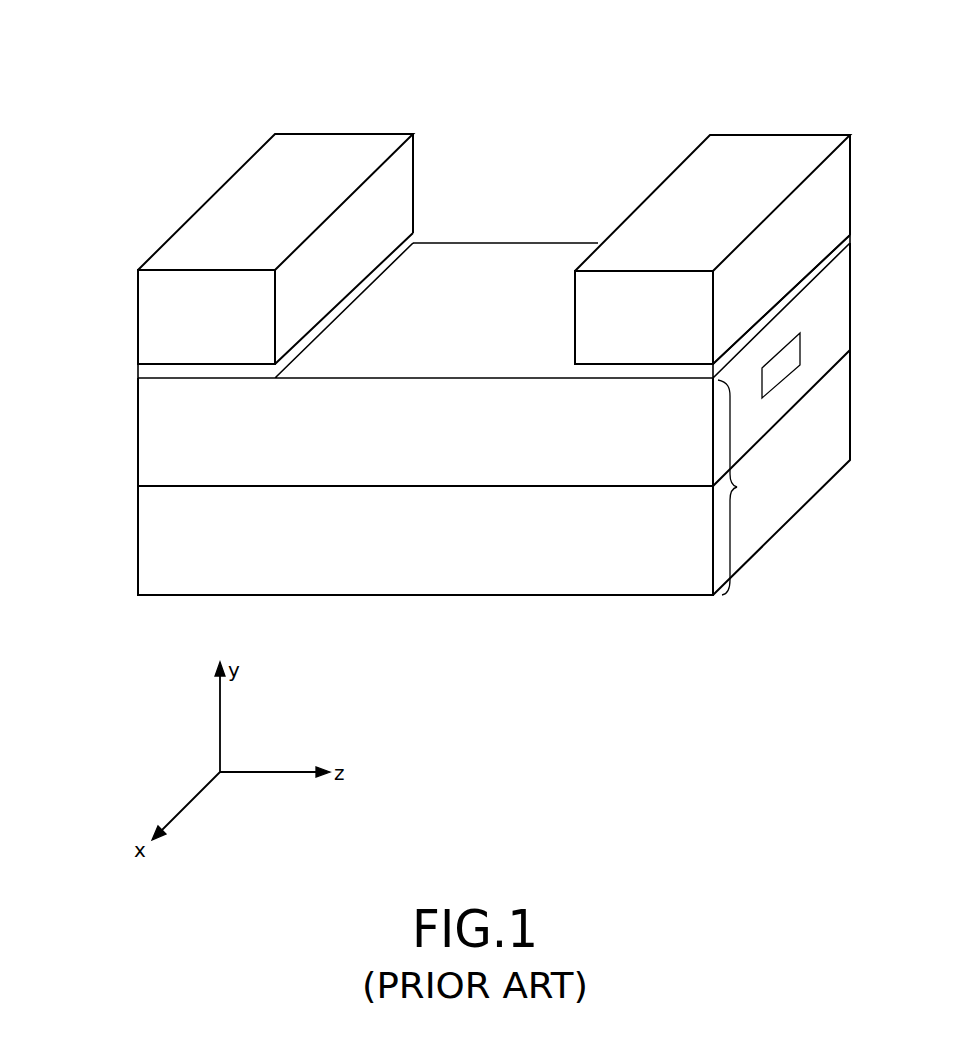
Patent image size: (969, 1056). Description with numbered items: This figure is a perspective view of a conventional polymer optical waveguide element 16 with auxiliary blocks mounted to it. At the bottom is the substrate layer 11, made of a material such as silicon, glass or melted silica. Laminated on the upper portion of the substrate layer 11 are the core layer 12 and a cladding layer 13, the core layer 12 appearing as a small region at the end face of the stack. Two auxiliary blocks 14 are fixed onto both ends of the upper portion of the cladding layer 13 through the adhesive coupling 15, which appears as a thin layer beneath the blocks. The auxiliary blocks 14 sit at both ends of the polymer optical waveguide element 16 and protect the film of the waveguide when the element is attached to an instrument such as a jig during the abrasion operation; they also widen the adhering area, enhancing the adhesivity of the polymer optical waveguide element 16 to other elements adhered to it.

The substrate layer 11 is at (157, 545).
The core layer 12 is at (798, 354).
The cladding layer 13 is at (157, 440).
The auxiliary blocks 14 is at (727, 150).
The adhesive coupling 15 is at (150, 373).
The polymer optical waveguide element 16 is at (737, 487).